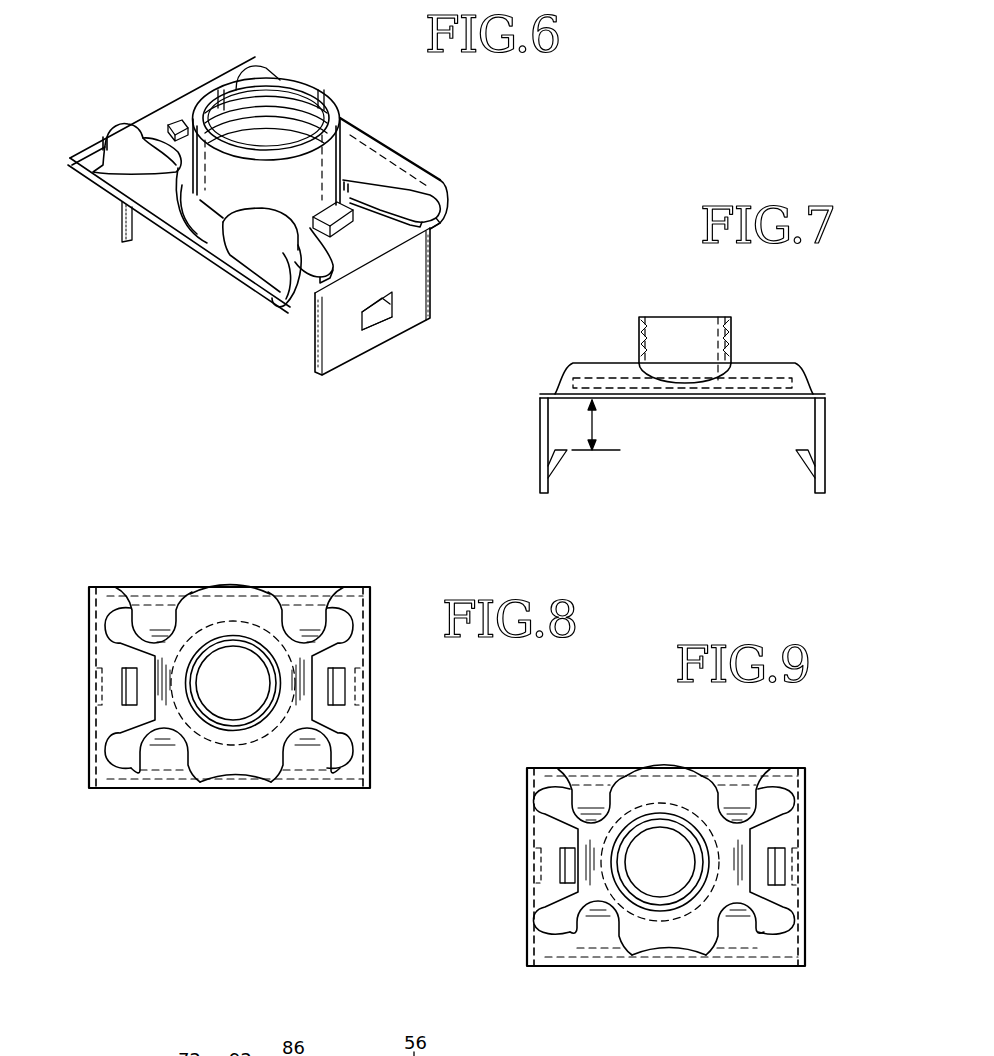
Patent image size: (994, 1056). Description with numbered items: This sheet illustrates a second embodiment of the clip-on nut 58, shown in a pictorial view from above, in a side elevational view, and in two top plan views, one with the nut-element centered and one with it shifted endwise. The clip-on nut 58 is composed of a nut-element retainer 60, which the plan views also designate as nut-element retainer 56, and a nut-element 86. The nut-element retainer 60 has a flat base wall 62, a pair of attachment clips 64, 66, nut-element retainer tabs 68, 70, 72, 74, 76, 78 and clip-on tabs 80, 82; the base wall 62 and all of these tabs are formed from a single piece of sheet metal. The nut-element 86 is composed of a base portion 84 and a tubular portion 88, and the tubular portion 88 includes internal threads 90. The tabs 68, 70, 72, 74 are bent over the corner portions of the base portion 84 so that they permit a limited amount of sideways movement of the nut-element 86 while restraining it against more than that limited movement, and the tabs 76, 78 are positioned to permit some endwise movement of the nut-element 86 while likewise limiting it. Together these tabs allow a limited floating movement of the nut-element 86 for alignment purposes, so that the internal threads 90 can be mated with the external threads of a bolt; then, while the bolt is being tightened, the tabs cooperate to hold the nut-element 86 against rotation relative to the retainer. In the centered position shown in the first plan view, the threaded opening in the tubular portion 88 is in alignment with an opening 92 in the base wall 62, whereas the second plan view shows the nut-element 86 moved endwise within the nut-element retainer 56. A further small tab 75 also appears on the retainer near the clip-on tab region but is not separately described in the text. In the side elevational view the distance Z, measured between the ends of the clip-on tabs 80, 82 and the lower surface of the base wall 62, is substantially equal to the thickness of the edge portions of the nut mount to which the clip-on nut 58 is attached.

In FIG. 7, the nut-element retainer 56 is at (546, 375).
In FIG. 8, the nut-element retainer 56 is at (378, 592).
In FIG. 9, the nut-element retainer 56 is at (545, 760).
In FIG. 6, the clip-on nut 58 is at (189, 280).
In FIG. 6, the nut-element retainer 60 is at (445, 213).
In FIG. 6, the base wall 62 is at (383, 237).
In FIG. 9, the base wall 62 is at (545, 803).
In FIG. 6, the attachment clip 64 is at (136, 228).
In FIG. 7, the attachment clip 64 is at (540, 455).
In FIG. 8, the attachment clip 64 is at (88, 750).
In FIG. 9, the attachment clip 64 is at (527, 835).
In FIG. 6, the attachment clip 66 is at (345, 343).
In FIG. 7, the attachment clip 66 is at (820, 488).
In FIG. 8, the attachment clip 66 is at (372, 695).
In FIG. 9, the attachment clip 66 is at (805, 903).
In FIG. 6, the nut-element retainer tab 68 is at (150, 130).
In FIG. 8, the nut-element retainer tab 68 is at (163, 748).
In FIG. 9, the nut-element retainer tab 68 is at (590, 918).
In FIG. 6, the nut-element retainer tab 70 is at (270, 213).
In FIG. 8, the nut-element retainer tab 70 is at (305, 748).
In FIG. 9, the nut-element retainer tab 70 is at (735, 918).
In FIG. 6, the nut-element retainer tab 72 is at (267, 73).
In FIG. 8, the nut-element retainer tab 72 is at (160, 628).
In FIG. 9, the nut-element retainer tab 72 is at (594, 800).
In FIG. 6, the nut-element retainer tab 74 is at (373, 178).
In FIG. 8, the nut-element retainer tab 74 is at (304, 628).
In FIG. 9, the nut-element retainer tab 74 is at (737, 805).
In FIG. 8, the tab 75 is at (343, 710).
In FIG. 9, the tab 75 is at (778, 850).
In FIG. 6, the nut-element retainer tab 76 is at (183, 117).
In FIG. 8, the nut-element retainer tab 76 is at (125, 705).
In FIG. 9, the nut-element retainer tab 76 is at (565, 882).
In FIG. 6, the nut-element retainer tab 78 is at (420, 198).
In FIG. 6, the clip-on tab 80 is at (333, 219).
In FIG. 7, the clip-on tab 80 is at (565, 455).
In FIG. 8, the clip-on tab 80 is at (98, 692).
In FIG. 9, the clip-on tab 80 is at (538, 870).
In FIG. 6, the clip-on tab 82 is at (382, 313).
In FIG. 7, the clip-on tab 82 is at (803, 455).
In FIG. 8, the clip-on tab 82 is at (362, 680).
In FIG. 9, the clip-on tab 82 is at (800, 862).
In FIG. 6, the base portion 84 is at (305, 272).
In FIG. 6, the nut-element 86 is at (333, 90).
In FIG. 7, the nut-element 86 is at (629, 344).
In FIG. 8, the nut-element 86 is at (233, 683).
In FIG. 9, the nut-element 86 is at (660, 814).
In FIG. 6, the tubular portion 88 is at (233, 205).
In FIG. 7, the tubular portion 88 is at (733, 348).
In FIG. 9, the tubular portion 88 is at (660, 915).
In FIG. 6, the internal threads 90 is at (347, 110).
In FIG. 7, the internal threads 90 is at (712, 325).
In FIG. 8, the opening 92 is at (243, 625).
In FIG. 7, the distance Z is at (597, 428).